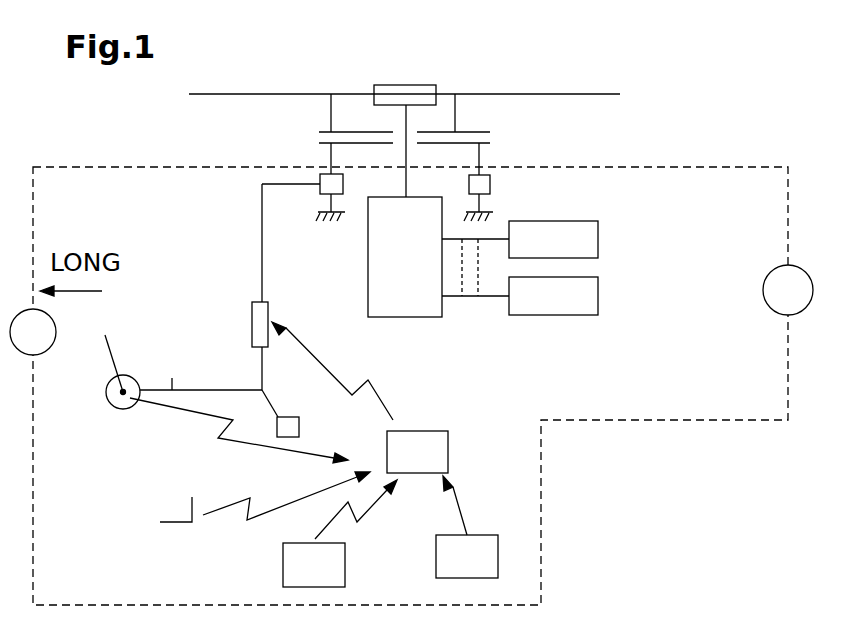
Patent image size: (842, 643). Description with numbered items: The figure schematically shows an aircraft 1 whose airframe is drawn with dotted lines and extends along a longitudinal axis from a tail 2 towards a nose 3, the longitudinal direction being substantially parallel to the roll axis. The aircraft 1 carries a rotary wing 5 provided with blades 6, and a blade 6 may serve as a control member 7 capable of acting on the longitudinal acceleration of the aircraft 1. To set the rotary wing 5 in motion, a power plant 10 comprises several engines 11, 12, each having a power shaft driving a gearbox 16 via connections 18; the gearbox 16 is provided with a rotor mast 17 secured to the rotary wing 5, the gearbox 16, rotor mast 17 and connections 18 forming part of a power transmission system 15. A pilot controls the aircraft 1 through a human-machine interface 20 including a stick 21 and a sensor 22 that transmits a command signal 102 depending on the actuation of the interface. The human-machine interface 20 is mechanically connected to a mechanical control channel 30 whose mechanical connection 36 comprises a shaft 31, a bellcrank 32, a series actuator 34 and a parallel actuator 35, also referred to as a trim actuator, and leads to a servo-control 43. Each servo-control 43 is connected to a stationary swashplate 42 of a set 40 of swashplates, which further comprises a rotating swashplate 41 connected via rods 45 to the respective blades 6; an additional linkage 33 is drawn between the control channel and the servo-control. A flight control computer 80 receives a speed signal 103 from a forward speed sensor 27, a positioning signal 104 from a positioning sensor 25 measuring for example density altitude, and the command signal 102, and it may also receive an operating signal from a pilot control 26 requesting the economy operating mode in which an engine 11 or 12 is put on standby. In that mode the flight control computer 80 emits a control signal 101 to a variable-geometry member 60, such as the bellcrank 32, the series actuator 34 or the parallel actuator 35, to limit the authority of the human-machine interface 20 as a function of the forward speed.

The aircraft 1 is at (603, 460).
The tail 2 is at (788, 290).
The nose 3 is at (33, 332).
The rotary wing 5 is at (435, 129).
The blades 6 is at (416, 61).
The control member 7 is at (600, 93).
The power plant 10 is at (516, 301).
The engine 11 is at (598, 232).
The engine 12 is at (598, 290).
The power transmission system 15 is at (438, 350).
The gearbox 16 is at (405, 257).
The rotor mast 17 is at (402, 113).
The connections 18 is at (475, 267).
The human-machine interface 20 is at (94, 412).
The stick 21 is at (94, 412).
The sensor 22 is at (137, 412).
The positioning sensor 25 is at (283, 557).
The control 26 is at (467, 527).
The forward speed sensor 27 is at (175, 522).
The mechanical control channel 30 is at (235, 275).
The shaft 31 is at (172, 378).
The bellcrank 32 is at (262, 390).
The steering column 33 is at (280, 183).
The series actuator 34 is at (250, 332).
The parallel actuator 35 is at (300, 431).
The mechanical connection 36 is at (245, 272).
The set of swashplates 40 is at (435, 138).
The rotating swashplate 41 is at (455, 100).
The stationary swashplate 42 is at (482, 143).
The servo-control 43 is at (320, 190).
The rods 45 is at (327, 110).
The variable-geometry member 60 is at (247, 319).
The flight control computer 80 is at (417, 452).
The control signal 101 is at (335, 371).
The command signal 102 is at (239, 430).
The speed signal 103 is at (286, 494).
The positioning signal 104 is at (362, 511).